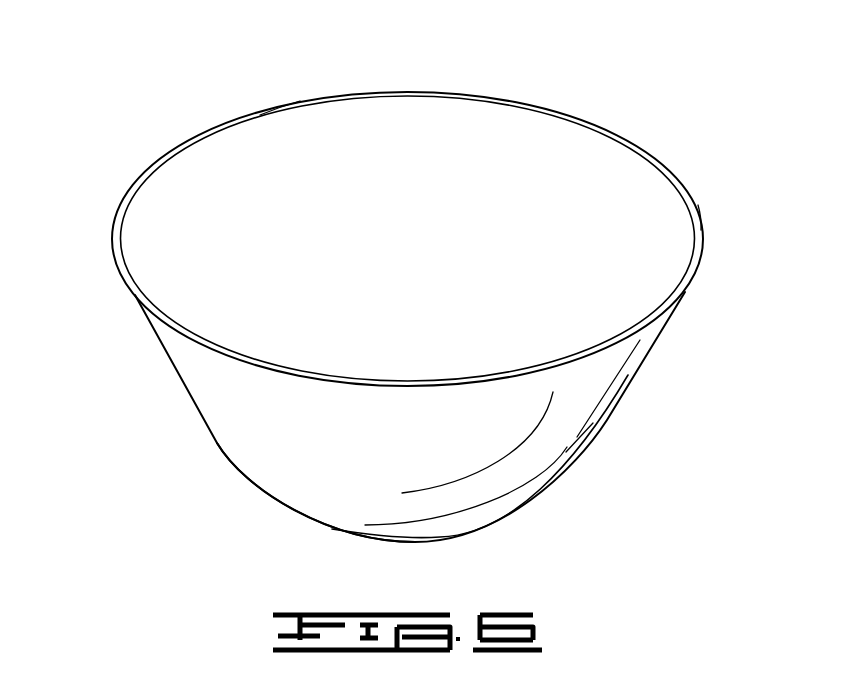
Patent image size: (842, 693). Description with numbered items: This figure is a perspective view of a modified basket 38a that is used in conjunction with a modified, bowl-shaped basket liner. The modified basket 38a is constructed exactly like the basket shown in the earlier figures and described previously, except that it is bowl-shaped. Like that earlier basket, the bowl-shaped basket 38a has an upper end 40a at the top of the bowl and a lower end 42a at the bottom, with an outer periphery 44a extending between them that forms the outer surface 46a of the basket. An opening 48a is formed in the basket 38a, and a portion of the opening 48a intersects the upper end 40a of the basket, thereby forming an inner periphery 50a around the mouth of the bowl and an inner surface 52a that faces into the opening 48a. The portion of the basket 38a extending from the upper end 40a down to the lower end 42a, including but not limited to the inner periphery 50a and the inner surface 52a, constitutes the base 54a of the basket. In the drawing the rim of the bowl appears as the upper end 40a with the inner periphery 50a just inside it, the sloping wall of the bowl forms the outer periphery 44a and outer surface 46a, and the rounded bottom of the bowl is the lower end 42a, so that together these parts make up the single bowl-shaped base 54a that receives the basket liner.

The modified basket 38a is at (516, 97).
The upper end 40a is at (142, 177).
The lower end 42a is at (437, 542).
The outer periphery 44a is at (217, 443).
The outer surface 46a is at (580, 415).
The opening 48a is at (690, 208).
The inner periphery 50a is at (627, 174).
The inner surface 52a is at (267, 142).
The base 54a is at (267, 500).